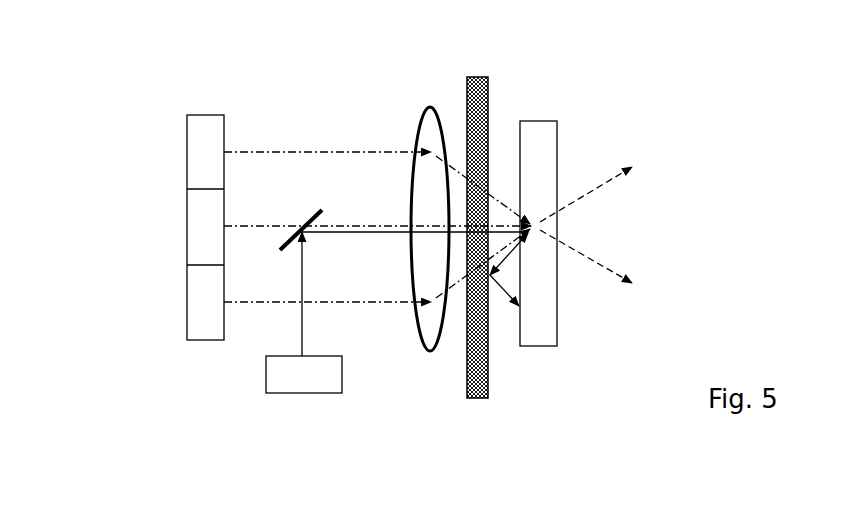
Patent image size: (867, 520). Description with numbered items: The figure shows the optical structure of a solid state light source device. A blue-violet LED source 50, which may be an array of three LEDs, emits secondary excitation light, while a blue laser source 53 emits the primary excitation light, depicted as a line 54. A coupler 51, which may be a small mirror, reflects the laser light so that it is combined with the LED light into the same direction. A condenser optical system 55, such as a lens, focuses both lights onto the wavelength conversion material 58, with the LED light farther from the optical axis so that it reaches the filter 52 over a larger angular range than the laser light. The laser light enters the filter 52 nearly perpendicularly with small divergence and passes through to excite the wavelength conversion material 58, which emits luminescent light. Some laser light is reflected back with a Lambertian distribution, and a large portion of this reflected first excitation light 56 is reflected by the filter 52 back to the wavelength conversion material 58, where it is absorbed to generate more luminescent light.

The blue-violet LED source 50 is at (203, 223).
The coupler 51 is at (314, 207).
The filter 52 is at (482, 375).
The blue laser source 53 is at (293, 370).
The line 54 is at (362, 230).
The condenser optical system 55 is at (431, 135).
The reflected first excitation light 56 is at (517, 306).
The wavelength conversion material 58 is at (533, 158).